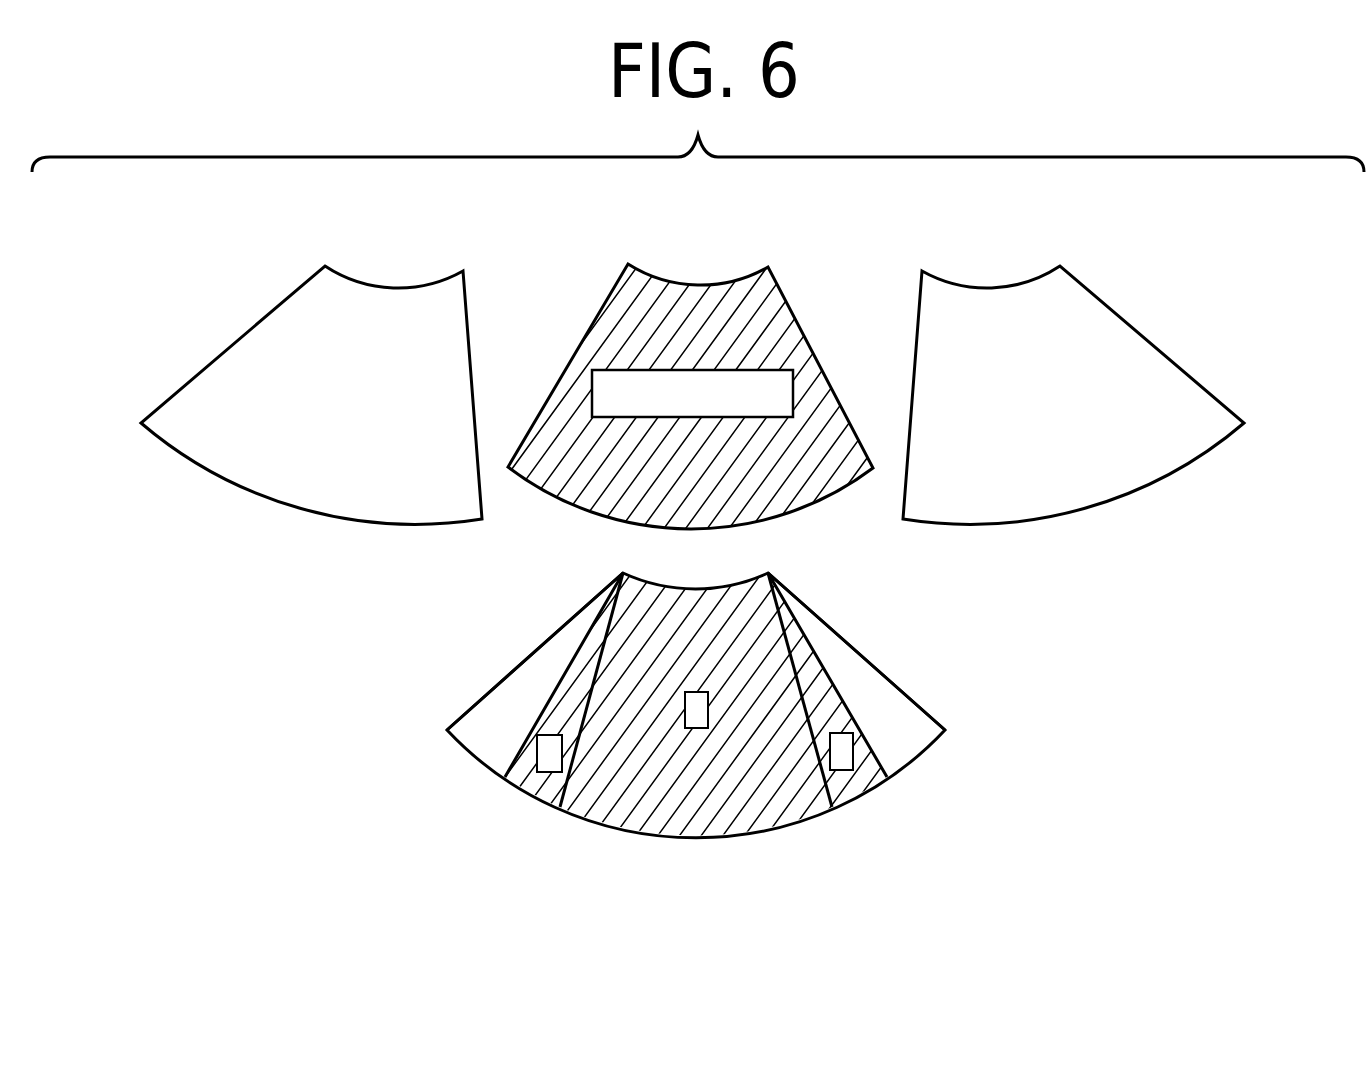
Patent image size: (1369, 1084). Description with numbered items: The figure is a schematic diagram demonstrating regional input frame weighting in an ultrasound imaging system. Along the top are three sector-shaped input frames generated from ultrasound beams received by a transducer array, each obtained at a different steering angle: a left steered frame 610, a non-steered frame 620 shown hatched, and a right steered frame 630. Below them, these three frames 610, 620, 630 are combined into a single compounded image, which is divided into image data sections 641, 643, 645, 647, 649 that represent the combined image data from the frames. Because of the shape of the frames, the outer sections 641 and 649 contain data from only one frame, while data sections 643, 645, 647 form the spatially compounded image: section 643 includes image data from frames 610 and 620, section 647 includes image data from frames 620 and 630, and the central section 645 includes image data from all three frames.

The input frame 610 is at (223, 350).
The input frame 620 is at (792, 310).
The input frame 630 is at (1168, 355).
The image data section 641 is at (535, 650).
The data section 643 is at (527, 797).
The data section 645 is at (730, 583).
The data section 647 is at (857, 795).
The image data section 649 is at (850, 648).